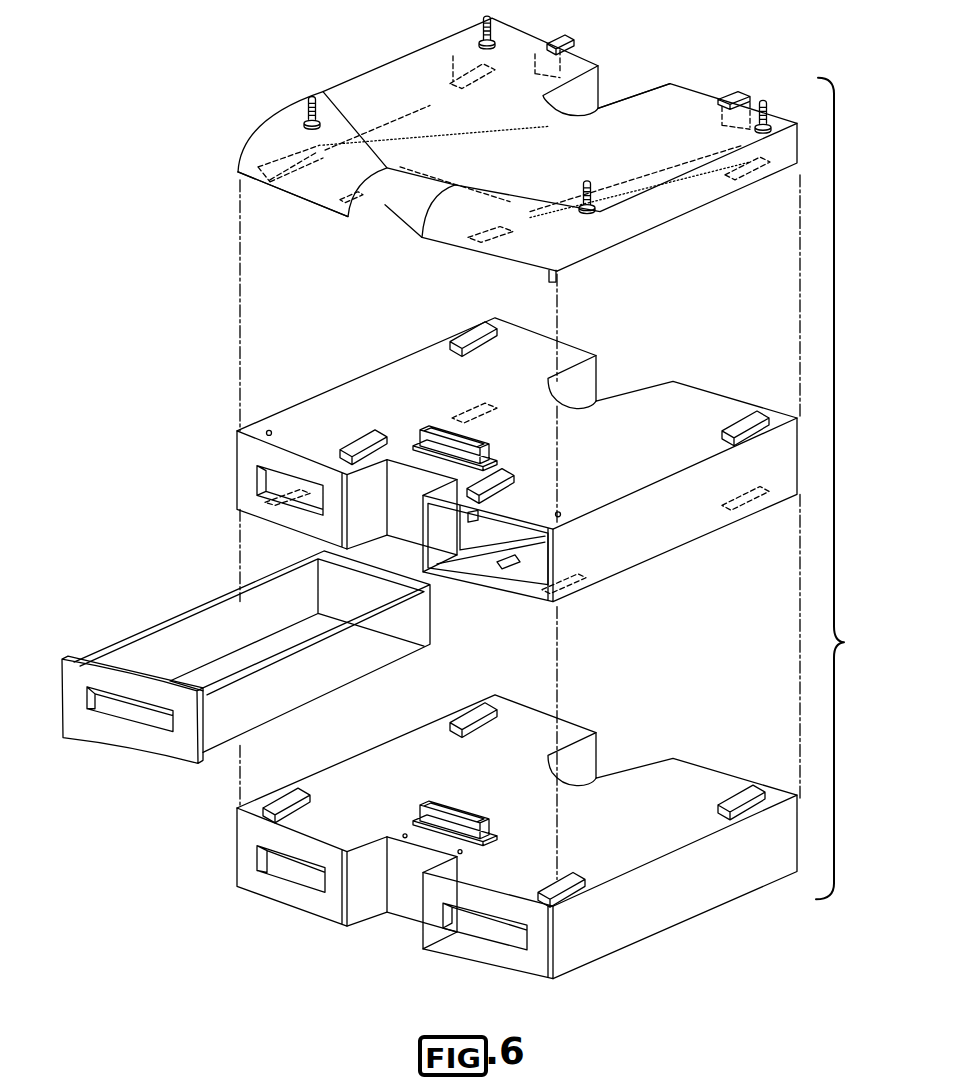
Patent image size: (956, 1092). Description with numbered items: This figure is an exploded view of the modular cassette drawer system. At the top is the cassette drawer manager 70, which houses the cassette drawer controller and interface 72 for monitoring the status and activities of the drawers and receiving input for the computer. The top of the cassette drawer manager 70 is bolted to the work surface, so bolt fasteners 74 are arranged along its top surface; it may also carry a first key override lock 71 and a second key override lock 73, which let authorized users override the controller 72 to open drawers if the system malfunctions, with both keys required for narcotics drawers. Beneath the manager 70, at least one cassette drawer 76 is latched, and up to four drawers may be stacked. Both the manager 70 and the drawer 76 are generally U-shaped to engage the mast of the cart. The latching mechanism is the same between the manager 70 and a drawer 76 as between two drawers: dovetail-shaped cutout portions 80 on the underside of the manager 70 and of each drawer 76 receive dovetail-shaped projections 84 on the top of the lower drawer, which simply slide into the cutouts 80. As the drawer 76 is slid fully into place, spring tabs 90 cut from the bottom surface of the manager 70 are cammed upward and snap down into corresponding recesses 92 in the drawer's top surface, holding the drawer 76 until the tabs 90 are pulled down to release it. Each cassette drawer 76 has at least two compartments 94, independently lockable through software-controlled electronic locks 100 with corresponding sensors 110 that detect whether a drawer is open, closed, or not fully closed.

The cassette drawer manager 70 is at (400, 70).
The first key override lock 71 is at (572, 40).
The cassette drawer controller and interface 72 is at (598, 150).
The second key override lock 73 is at (728, 88).
The bolt fasteners 74 is at (497, 19).
The cassette drawer 76 is at (660, 523).
The dovetail-shaped cutout portions 80 is at (451, 60).
The dovetail-shaped projections 84 is at (466, 333).
The spring tabs 90 is at (270, 182).
The recesses 92 is at (269, 427).
The compartments 94 is at (184, 752).
The electronic locks 100 is at (478, 517).
The sensors 110 is at (524, 558).